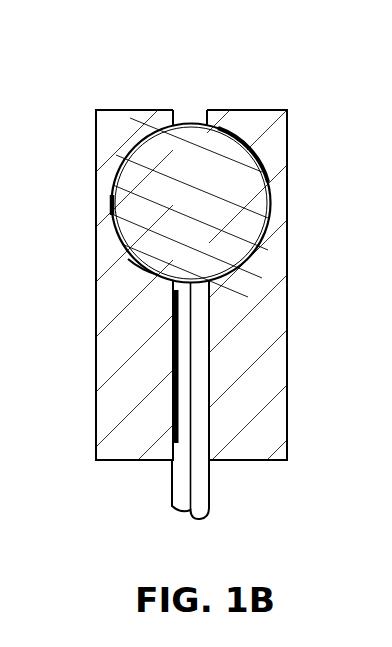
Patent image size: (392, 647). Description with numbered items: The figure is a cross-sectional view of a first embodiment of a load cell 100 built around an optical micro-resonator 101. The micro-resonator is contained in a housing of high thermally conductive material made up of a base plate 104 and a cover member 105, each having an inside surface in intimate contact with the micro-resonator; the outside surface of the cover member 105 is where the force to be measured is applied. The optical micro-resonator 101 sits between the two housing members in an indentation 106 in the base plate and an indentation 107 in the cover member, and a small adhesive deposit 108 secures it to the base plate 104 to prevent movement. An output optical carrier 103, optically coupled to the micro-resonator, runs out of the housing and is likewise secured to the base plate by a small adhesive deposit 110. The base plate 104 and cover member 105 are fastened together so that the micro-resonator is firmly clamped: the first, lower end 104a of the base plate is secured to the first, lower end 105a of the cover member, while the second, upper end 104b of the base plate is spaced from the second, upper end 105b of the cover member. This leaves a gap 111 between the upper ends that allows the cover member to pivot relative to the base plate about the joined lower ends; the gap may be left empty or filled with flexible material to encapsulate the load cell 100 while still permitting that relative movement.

The load cell 100 is at (193, 283).
The optical micro-resonator 101 is at (255, 228).
The output optical carrier 103 is at (172, 503).
The base plate 104 is at (96, 228).
The first (lower) end of base plate 104a is at (135, 459).
The second (upper) end of base plate 104b is at (117, 109).
The cover member 105 is at (288, 198).
The first (lower) end of cover member 105a is at (240, 460).
The second (upper) end of cover member 105b is at (268, 109).
The indentation in base plate 106 is at (133, 272).
The indentation in cover member 107 is at (247, 147).
The small adhesive deposit 108 is at (110, 195).
The small adhesive deposit 110 is at (173, 402).
The gap 111 is at (187, 114).